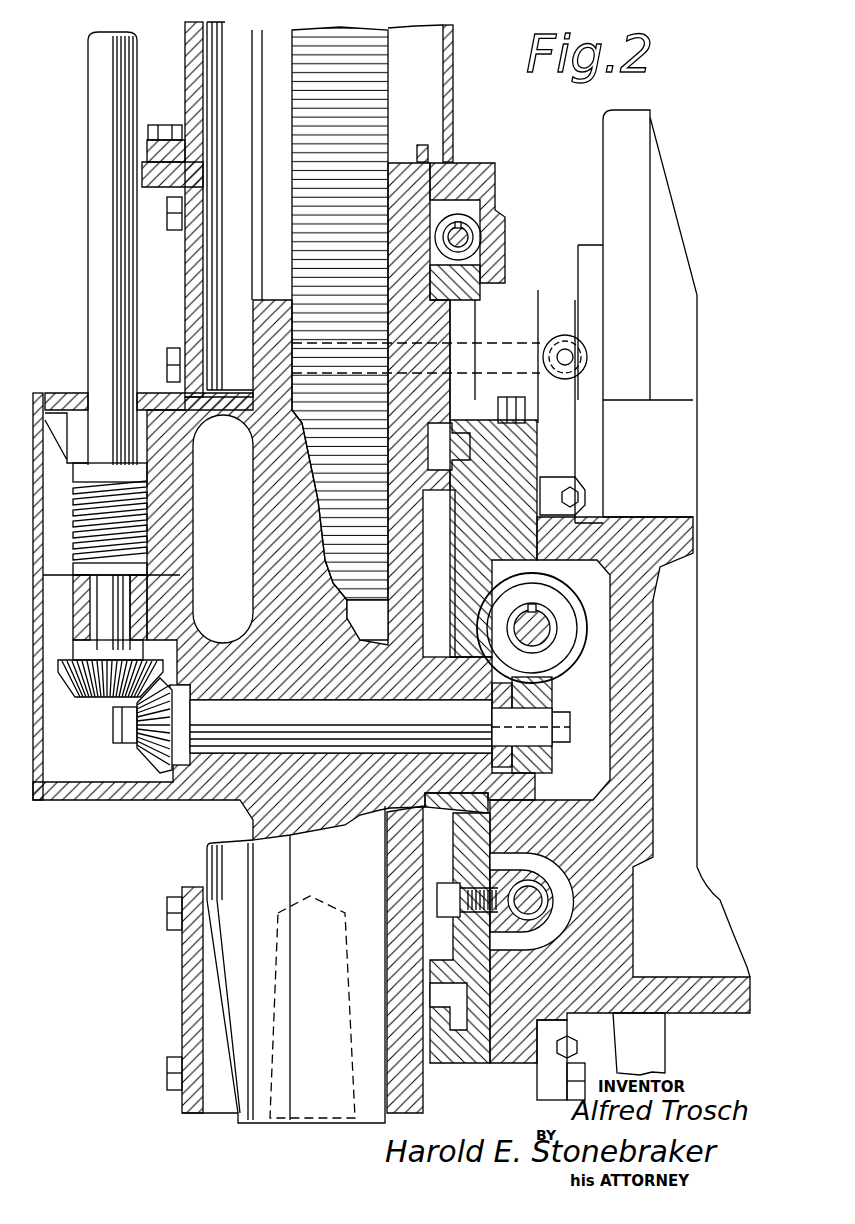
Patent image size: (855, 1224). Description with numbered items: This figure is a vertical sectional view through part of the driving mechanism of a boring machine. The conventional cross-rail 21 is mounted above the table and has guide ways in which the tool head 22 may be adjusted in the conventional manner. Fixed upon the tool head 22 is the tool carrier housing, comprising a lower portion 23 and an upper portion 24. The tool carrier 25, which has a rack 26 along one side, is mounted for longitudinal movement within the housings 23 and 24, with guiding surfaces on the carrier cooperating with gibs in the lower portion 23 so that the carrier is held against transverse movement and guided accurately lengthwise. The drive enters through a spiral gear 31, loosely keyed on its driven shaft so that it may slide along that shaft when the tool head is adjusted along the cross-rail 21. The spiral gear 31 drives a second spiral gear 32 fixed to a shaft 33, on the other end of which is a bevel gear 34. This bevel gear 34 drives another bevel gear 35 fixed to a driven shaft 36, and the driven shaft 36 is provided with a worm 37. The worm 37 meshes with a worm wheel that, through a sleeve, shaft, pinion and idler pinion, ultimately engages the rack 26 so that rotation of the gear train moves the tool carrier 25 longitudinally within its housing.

The cross-rail 21 is at (633, 833).
The tool head 22 is at (410, 1108).
The lower portion of tool carrier housing 23 is at (192, 278).
The upper portion of tool carrier housing 24 is at (452, 85).
The tool carrier 25 is at (270, 298).
The rack 26 is at (372, 133).
The spiral gear 31 is at (550, 597).
The second spiral gear 32 is at (553, 747).
The shaft 33 is at (341, 725).
The bevel gear 34 is at (133, 753).
The bevel gear 35 is at (70, 693).
The driven shaft 36 is at (98, 142).
The worm 37 is at (147, 531).